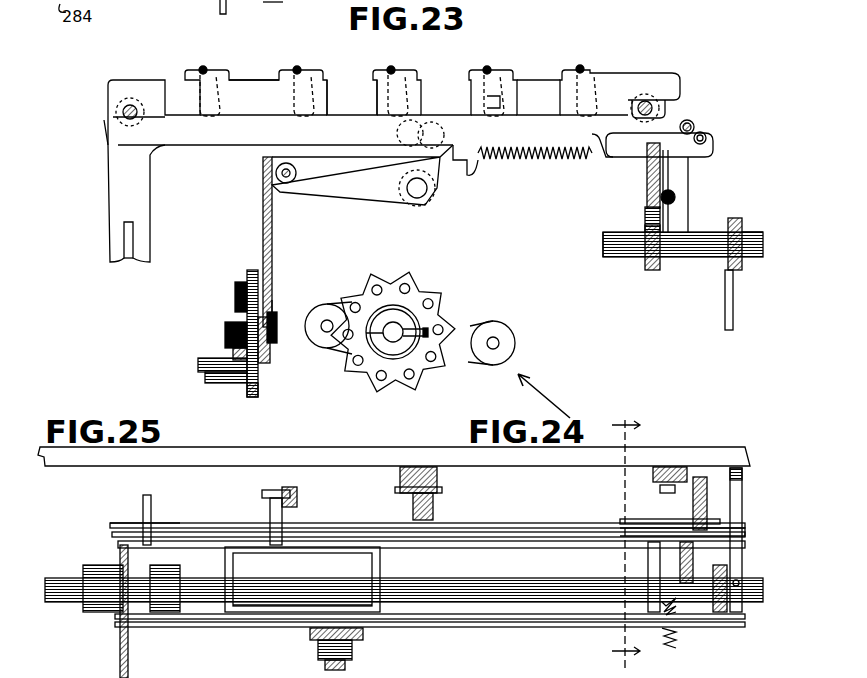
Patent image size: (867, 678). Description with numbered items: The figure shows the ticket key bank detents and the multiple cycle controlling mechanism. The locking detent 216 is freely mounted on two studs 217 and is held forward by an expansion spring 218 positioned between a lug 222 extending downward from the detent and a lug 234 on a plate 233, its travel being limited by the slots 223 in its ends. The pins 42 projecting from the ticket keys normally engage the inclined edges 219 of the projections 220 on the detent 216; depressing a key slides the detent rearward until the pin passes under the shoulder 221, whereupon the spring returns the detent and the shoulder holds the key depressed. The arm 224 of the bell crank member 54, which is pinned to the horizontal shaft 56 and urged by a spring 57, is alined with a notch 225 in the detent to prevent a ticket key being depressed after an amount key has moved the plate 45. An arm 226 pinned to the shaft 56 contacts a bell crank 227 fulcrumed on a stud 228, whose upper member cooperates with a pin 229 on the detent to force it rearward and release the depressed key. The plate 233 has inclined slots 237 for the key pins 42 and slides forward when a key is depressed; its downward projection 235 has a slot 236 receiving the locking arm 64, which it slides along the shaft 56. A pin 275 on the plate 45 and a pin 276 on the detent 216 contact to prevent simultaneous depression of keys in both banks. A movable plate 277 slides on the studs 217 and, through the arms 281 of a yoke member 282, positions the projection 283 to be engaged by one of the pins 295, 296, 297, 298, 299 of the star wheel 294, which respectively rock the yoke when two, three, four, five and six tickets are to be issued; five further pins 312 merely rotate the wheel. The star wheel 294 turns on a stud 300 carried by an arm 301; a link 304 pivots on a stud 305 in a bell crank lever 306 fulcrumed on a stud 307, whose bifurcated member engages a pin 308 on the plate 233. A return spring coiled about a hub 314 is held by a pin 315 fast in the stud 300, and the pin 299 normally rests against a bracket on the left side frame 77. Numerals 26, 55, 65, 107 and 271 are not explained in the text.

In FIG. 23, the pins 42 is at (206, 68).
In FIG. 23, the locking detent 216 is at (618, 80).
In FIG. 25, the locking detent 216 is at (152, 677).
In FIG. 23, the studs 217 is at (136, 106).
In FIG. 25, the studs 217 is at (128, 520).
In FIG. 23, the expansion spring 218 is at (505, 160).
In FIG. 23, the inclined edges 219 is at (222, 106).
In FIG. 23, the projections 220 is at (323, 82).
In FIG. 23, the shoulder 221 is at (486, 107).
In FIG. 23, the lug 222 is at (470, 165).
In FIG. 23, the slots 223 is at (122, 111).
In FIG. 23, the arm 224 is at (650, 180).
In FIG. 23, the notch 225 is at (646, 172).
In FIG. 23, the arm 226 is at (736, 218).
In FIG. 25, the arm 226 is at (742, 516).
In FIG. 23, the bell crank 227 is at (690, 170).
In FIG. 25, the bell crank 227 is at (744, 478).
In FIG. 23, the stud 228 is at (680, 258).
In FIG. 25, the stud 228 is at (660, 488).
In FIG. 23, the pin 229 is at (707, 137).
In FIG. 25, the pin 229 is at (694, 506).
In FIG. 23, the plate 233 is at (360, 72).
In FIG. 25, the plate 233 is at (500, 524).
In FIG. 23, the lug 234 is at (560, 160).
In FIG. 23, the projection 235 is at (118, 183).
In FIG. 23, the slot 236 is at (128, 262).
In FIG. 23, the inclined slots 237 is at (285, 78).
In FIG. 23, the arm 271 is at (733, 300).
In FIG. 25, the arm 271 is at (742, 502).
In FIG. 25, the pin 275 is at (716, 616).
In FIG. 23, the pin 276 is at (693, 124).
In FIG. 25, the pin 276 is at (694, 558).
In FIG. 25, the movable plate 277 is at (472, 546).
In FIG. 25, the arms 281 is at (230, 548).
In FIG. 25, the yoke member 282 is at (262, 610).
In FIG. 25, the projection 283 is at (243, 582).
In FIG. 23, the star wheel 294 is at (252, 272).
In FIG. 24, the star wheel 294 is at (418, 282).
In FIG. 23, the pin 295 is at (226, 328).
In FIG. 24, the pin 295 is at (443, 326).
In FIG. 23, the pin 296 is at (232, 346).
In FIG. 24, the pin 296 is at (442, 356).
In FIG. 23, the pin 297 is at (243, 385).
In FIG. 24, the pin 297 is at (410, 380).
In FIG. 23, the pin 298 is at (206, 379).
In FIG. 24, the pin 298 is at (382, 382).
In FIG. 23, the pin 299 is at (200, 362).
In FIG. 24, the pin 299 is at (358, 366).
In FIG. 23, the stud 300 is at (276, 318).
In FIG. 24, the stud 300 is at (288, 316).
In FIG. 23, the arm 301 is at (262, 364).
In FIG. 24, the arm 301 is at (471, 332).
In FIG. 23, the link 304 is at (262, 196).
In FIG. 23, the stud 305 is at (297, 173).
In FIG. 23, the bell crank lever 306 is at (352, 194).
In FIG. 23, the stud 307 is at (420, 198).
In FIG. 23, the pin 308 is at (426, 133).
In FIG. 25, the pin 308 is at (434, 500).
In FIG. 23, the pins 312 is at (234, 290).
In FIG. 24, the pins 312 is at (375, 286).
In FIG. 24, the hub 314 is at (432, 362).
In FIG. 24, the pin 315 is at (382, 338).
In FIG. 25, the section line 26 is at (626, 538).
In FIG. 25, the plate 45 is at (530, 628).
In FIG. 23, the bell crank member 54 is at (645, 212).
In FIG. 25, the bell crank member 54 is at (648, 557).
In FIG. 23, the collar 55 is at (647, 262).
In FIG. 23, the horizontal shaft 56 is at (760, 258).
In FIG. 25, the horizontal shaft 56 is at (68, 578).
In FIG. 23, the spring 57 is at (676, 196).
In FIG. 25, the locking arm 64 is at (120, 645).
In FIG. 25, the collar 65 is at (96, 565).
In FIG. 25, the left side frame 77 is at (552, 468).
In FIG. 25, the block 107 is at (432, 628).